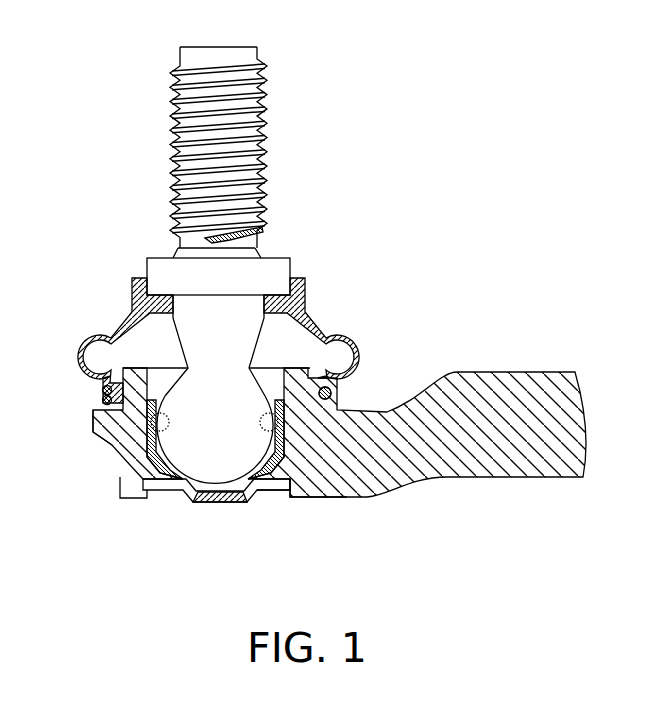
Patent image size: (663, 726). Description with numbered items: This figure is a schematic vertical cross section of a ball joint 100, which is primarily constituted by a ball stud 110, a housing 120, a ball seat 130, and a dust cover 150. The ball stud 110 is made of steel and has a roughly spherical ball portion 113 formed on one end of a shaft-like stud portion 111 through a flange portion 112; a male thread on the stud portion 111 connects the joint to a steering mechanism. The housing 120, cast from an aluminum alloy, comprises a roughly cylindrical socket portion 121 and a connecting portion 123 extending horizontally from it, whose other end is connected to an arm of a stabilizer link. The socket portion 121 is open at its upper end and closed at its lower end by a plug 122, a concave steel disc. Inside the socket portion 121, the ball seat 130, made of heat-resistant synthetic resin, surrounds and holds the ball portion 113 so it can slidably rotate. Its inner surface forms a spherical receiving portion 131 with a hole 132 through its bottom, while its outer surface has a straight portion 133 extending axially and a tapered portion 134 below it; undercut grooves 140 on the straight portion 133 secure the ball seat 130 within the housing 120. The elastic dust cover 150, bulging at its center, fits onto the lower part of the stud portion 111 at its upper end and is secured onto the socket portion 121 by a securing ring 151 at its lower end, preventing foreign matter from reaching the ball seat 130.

The ball joint 100 is at (100, 90).
The ball stud 110 is at (272, 257).
The stud portion 111 is at (265, 146).
The flange portion 112 is at (160, 257).
The ball portion 113 is at (217, 488).
The housing 120 is at (115, 455).
The socket portion 121 is at (95, 417).
The plug 122 is at (255, 491).
The connecting portion 123 is at (556, 372).
The ball seat 130 is at (160, 405).
The receiving portion 131 is at (283, 405).
The hole 132 is at (181, 484).
The straight portion 133 is at (338, 490).
The tapered portion 134 is at (290, 481).
The undercut grooves 140 is at (122, 470).
The dust cover 150 is at (100, 328).
The securing ring 151 is at (336, 392).